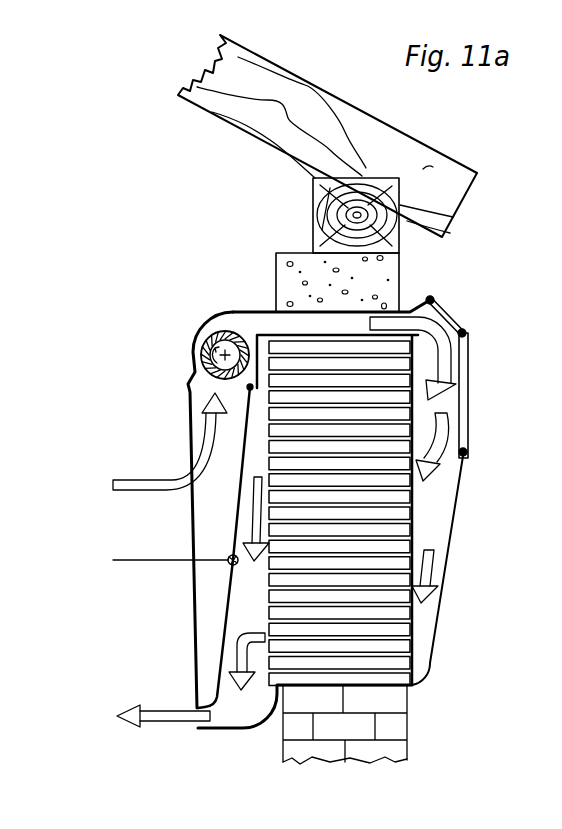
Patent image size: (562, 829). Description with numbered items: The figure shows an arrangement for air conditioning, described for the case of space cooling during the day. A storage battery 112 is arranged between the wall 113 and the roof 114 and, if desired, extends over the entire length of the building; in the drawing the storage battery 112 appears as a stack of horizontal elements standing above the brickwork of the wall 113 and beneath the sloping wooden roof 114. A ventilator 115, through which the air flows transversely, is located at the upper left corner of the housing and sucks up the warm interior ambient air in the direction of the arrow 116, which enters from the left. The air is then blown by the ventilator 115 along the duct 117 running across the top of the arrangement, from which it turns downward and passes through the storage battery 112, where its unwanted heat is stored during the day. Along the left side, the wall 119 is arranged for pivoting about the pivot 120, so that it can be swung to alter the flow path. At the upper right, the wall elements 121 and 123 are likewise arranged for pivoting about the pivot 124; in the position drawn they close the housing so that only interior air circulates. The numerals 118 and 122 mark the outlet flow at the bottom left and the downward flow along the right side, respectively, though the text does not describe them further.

The storage battery 112 is at (408, 626).
The wall 113 is at (389, 724).
The roof 114 is at (245, 113).
The ventilator 115 is at (200, 355).
The arrow 116 is at (163, 483).
The duct 117 is at (338, 326).
The air outlet 118 is at (160, 717).
The wall 119 is at (228, 598).
The pivot 120 is at (228, 558).
The wall element 121 is at (448, 308).
The air passage 122 is at (405, 552).
The wall element 123 is at (466, 408).
The pivot 124 is at (466, 334).